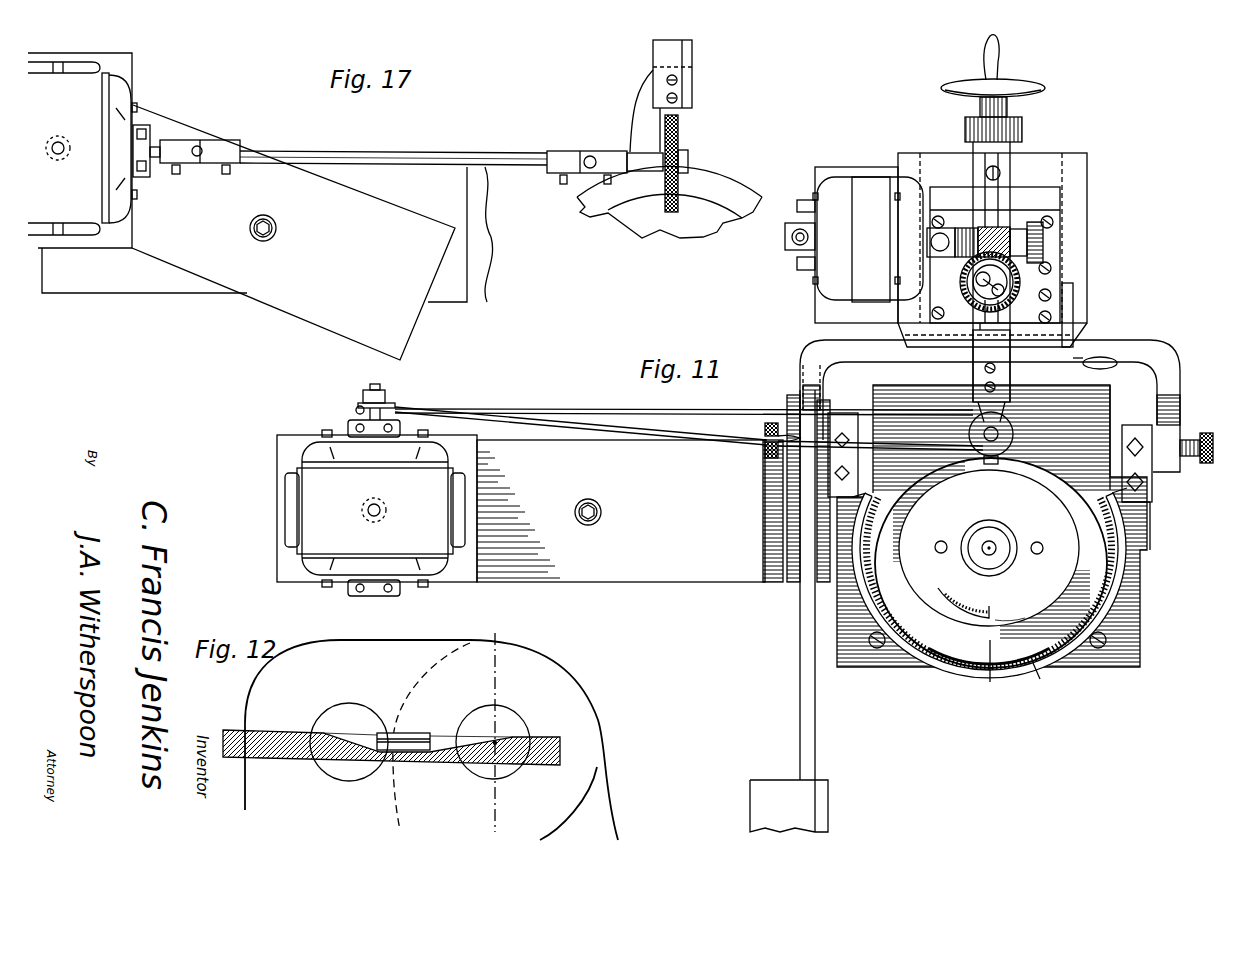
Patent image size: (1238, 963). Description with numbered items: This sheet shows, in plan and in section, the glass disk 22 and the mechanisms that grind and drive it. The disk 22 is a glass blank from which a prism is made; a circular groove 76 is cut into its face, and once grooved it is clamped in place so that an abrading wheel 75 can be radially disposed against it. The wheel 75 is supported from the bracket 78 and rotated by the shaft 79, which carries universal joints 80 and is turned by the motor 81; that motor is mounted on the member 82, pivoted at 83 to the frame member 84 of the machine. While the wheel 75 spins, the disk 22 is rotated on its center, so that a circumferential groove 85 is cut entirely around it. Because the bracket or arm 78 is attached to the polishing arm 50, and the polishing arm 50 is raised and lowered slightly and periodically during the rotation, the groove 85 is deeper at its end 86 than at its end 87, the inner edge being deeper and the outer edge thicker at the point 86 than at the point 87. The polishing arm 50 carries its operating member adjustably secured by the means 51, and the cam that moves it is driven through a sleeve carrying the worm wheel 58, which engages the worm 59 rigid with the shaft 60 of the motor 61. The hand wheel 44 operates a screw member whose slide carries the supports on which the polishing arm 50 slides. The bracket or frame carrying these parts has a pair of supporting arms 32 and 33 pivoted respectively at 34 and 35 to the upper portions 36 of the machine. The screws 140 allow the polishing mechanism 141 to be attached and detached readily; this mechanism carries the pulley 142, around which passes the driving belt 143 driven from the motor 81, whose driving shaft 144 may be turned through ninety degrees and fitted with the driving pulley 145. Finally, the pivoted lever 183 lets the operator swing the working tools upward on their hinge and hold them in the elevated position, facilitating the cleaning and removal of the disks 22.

In FIG. 17, the glass disk 22 is at (710, 219).
In FIG. 11, the glass disk 22 is at (1050, 520).
In FIG. 12, the glass disk 22 is at (263, 740).
In FIG. 11, the supporting arm 32 is at (1178, 395).
In FIG. 11, the supporting arm 33 is at (800, 366).
In FIG. 11, the pivot 34 is at (1195, 438).
In FIG. 11, the pivot 35 is at (777, 458).
In FIG. 12, the pivot 35 is at (496, 744).
In FIG. 11, the upper portions of the machine 36 is at (1140, 523).
In FIG. 11, the hand wheel 44 is at (1012, 82).
In FIG. 17, the polishing arm 50 is at (662, 52).
In FIG. 11, the polishing arm 50 is at (993, 343).
In FIG. 11, the securing means 51 is at (996, 172).
In FIG. 11, the worm wheel 58 is at (1050, 248).
In FIG. 11, the worm 59 is at (1010, 228).
In FIG. 11, the shaft 60 is at (1020, 230).
In FIG. 11, the motor 61 is at (862, 180).
In FIG. 17, the abrading wheel 75 is at (680, 130).
In FIG. 11, the circular groove 76 is at (1027, 620).
In FIG. 12, the circular groove 76 is at (405, 745).
In FIG. 17, the bracket 78 is at (640, 108).
In FIG. 17, the shaft 79 is at (505, 156).
In FIG. 17, the universal joints 80 is at (203, 148).
In FIG. 17, the motor 81 is at (123, 122).
In FIG. 11, the motor 81 is at (310, 482).
In FIG. 17, the supporting member 82 is at (398, 222).
In FIG. 17, the pivot 83 is at (272, 222).
In FIG. 11, the pivot 83 is at (590, 508).
In FIG. 17, the frame member 84 is at (135, 290).
In FIG. 11, the frame member 84 is at (688, 578).
In FIG. 11, the circumferential groove 85 is at (918, 635).
In FIG. 11, the groove end 86 is at (980, 656).
In FIG. 12, the groove end 86 is at (522, 742).
In FIG. 11, the groove end 87 is at (1002, 656).
In FIG. 12, the groove end 87 is at (452, 741).
In FIG. 17, the screws 140 is at (678, 97).
In FIG. 11, the polishing mechanism 141 is at (997, 410).
In FIG. 11, the pulley 142 is at (998, 443).
In FIG. 11, the driving belt 143 is at (742, 410).
In FIG. 11, the driving shaft 144 is at (380, 388).
In FIG. 11, the driving pulley 145 is at (363, 405).
In FIG. 11, the pivoted lever 183 is at (1073, 340).